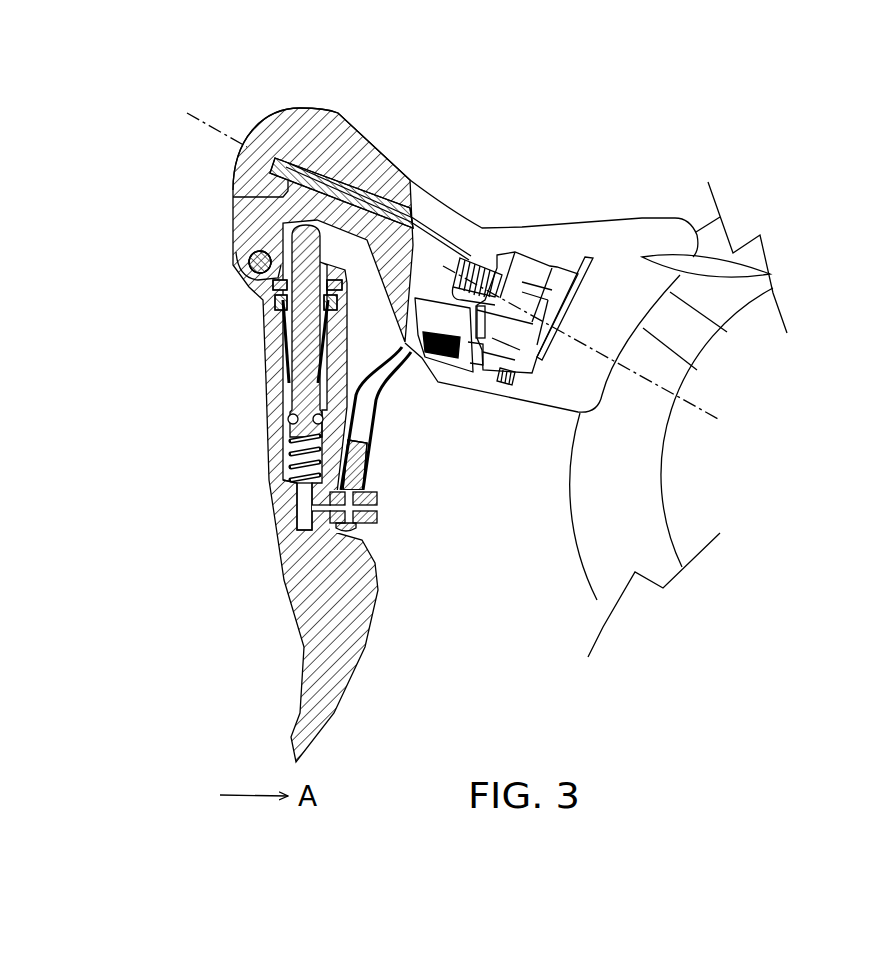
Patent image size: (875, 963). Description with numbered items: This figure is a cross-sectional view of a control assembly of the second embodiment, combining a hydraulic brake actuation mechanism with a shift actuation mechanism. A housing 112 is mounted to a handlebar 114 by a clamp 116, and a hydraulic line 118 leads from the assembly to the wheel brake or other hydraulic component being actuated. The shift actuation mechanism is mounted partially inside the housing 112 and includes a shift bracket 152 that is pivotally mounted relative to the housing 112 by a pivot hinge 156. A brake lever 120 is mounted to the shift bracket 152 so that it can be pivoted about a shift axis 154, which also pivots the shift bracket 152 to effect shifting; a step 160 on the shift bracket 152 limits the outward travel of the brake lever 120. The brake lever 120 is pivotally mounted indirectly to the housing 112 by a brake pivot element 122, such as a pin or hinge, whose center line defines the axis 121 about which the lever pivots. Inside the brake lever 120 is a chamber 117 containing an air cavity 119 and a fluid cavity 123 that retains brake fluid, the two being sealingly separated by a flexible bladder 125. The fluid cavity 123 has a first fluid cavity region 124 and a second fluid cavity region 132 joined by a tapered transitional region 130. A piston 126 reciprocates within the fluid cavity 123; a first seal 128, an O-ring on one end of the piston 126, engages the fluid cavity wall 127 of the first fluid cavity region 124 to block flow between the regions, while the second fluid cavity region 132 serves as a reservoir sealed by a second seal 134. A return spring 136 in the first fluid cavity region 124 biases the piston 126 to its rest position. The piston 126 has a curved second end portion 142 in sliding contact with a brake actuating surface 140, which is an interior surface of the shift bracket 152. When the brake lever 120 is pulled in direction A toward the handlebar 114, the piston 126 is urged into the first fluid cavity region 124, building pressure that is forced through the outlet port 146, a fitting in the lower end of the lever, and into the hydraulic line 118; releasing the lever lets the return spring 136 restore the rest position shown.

The housing 112 is at (612, 226).
The handlebar 114 is at (638, 538).
The clamp 116 is at (697, 347).
The chamber 117 is at (256, 372).
The hydraulic line 118 is at (750, 278).
The air cavity 119 is at (335, 318).
The brake lever 120 is at (305, 615).
The axis 121 is at (238, 258).
The brake pivot element 122 is at (262, 252).
The fluid cavity 123 is at (329, 397).
The first fluid cavity region 124 is at (300, 463).
The flexible bladder 125 is at (287, 355).
The piston 126 is at (290, 340).
The fluid cavity wall 127 is at (305, 450).
The first seal 128 is at (373, 443).
The tapered transitional region 130 is at (293, 413).
The second fluid cavity region 132 is at (282, 377).
The second seal 134 is at (273, 302).
The return spring 136 is at (283, 480).
The brake actuating surface 140 is at (315, 225).
The curved second end portion 142 is at (352, 205).
The outlet port 146 is at (347, 534).
The shift bracket 152 is at (425, 278).
The shift axis 154 is at (207, 127).
The pivot hinge 156 is at (470, 255).
The step 160 is at (247, 260).